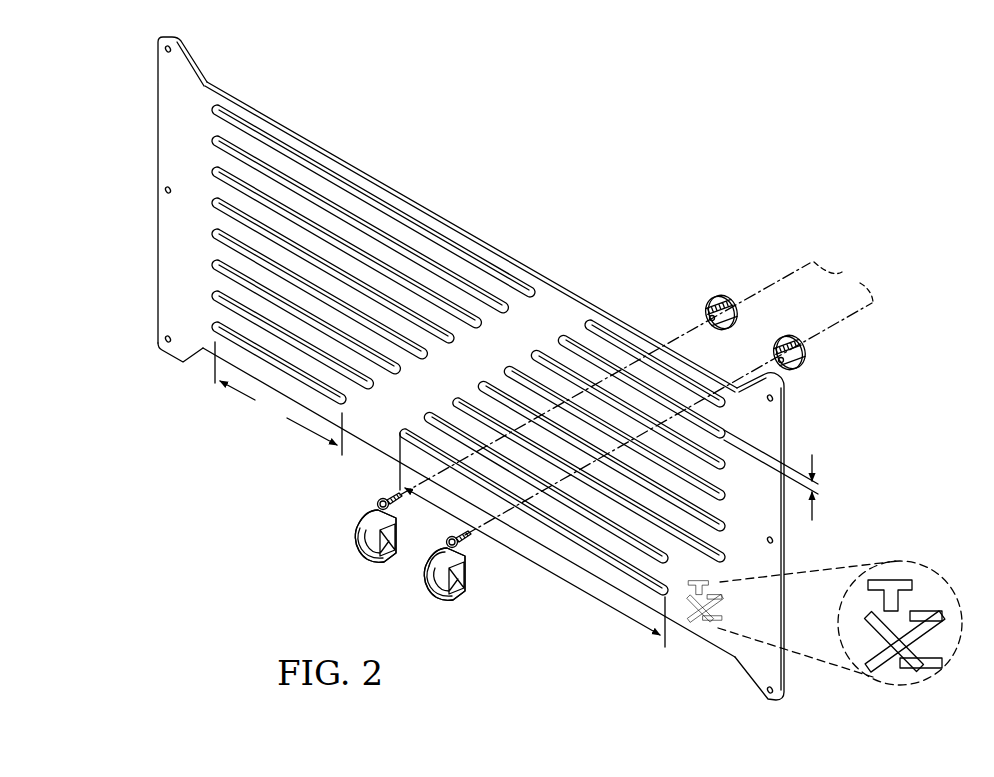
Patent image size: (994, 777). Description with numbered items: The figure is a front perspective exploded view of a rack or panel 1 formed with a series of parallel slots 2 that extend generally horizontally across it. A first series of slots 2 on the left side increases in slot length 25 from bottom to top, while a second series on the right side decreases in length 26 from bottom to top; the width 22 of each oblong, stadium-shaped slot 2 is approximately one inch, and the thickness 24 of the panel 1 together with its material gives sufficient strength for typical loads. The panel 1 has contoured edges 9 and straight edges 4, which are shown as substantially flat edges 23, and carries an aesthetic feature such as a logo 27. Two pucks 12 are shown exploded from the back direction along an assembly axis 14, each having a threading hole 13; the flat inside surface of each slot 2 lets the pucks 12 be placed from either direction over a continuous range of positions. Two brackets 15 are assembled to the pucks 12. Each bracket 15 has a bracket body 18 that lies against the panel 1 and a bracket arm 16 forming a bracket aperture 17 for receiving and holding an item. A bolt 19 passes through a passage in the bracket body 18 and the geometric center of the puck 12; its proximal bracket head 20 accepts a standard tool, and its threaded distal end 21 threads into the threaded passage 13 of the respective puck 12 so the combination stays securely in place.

The panel 1 is at (565, 368).
The slot 2 is at (408, 355).
The straight edge 4 is at (471, 368).
The contoured edge 9 is at (200, 55).
The puck 12 is at (754, 335).
The threading hole 13 is at (709, 318).
The assembly axis 14 is at (636, 398).
The bracket 15 is at (463, 606).
The bracket arm 16 is at (423, 593).
The bracket aperture 17 is at (347, 533).
The bracket body 18 is at (381, 553).
The bolt 19 is at (377, 505).
The bracket head 20 is at (465, 552).
The distal end 21 is at (405, 491).
The width 22 is at (814, 487).
The flat edge 23 is at (592, 298).
The thickness 24 is at (192, 105).
The slot length 25 is at (278, 398).
The length 26 is at (556, 575).
The logo 27 is at (705, 628).